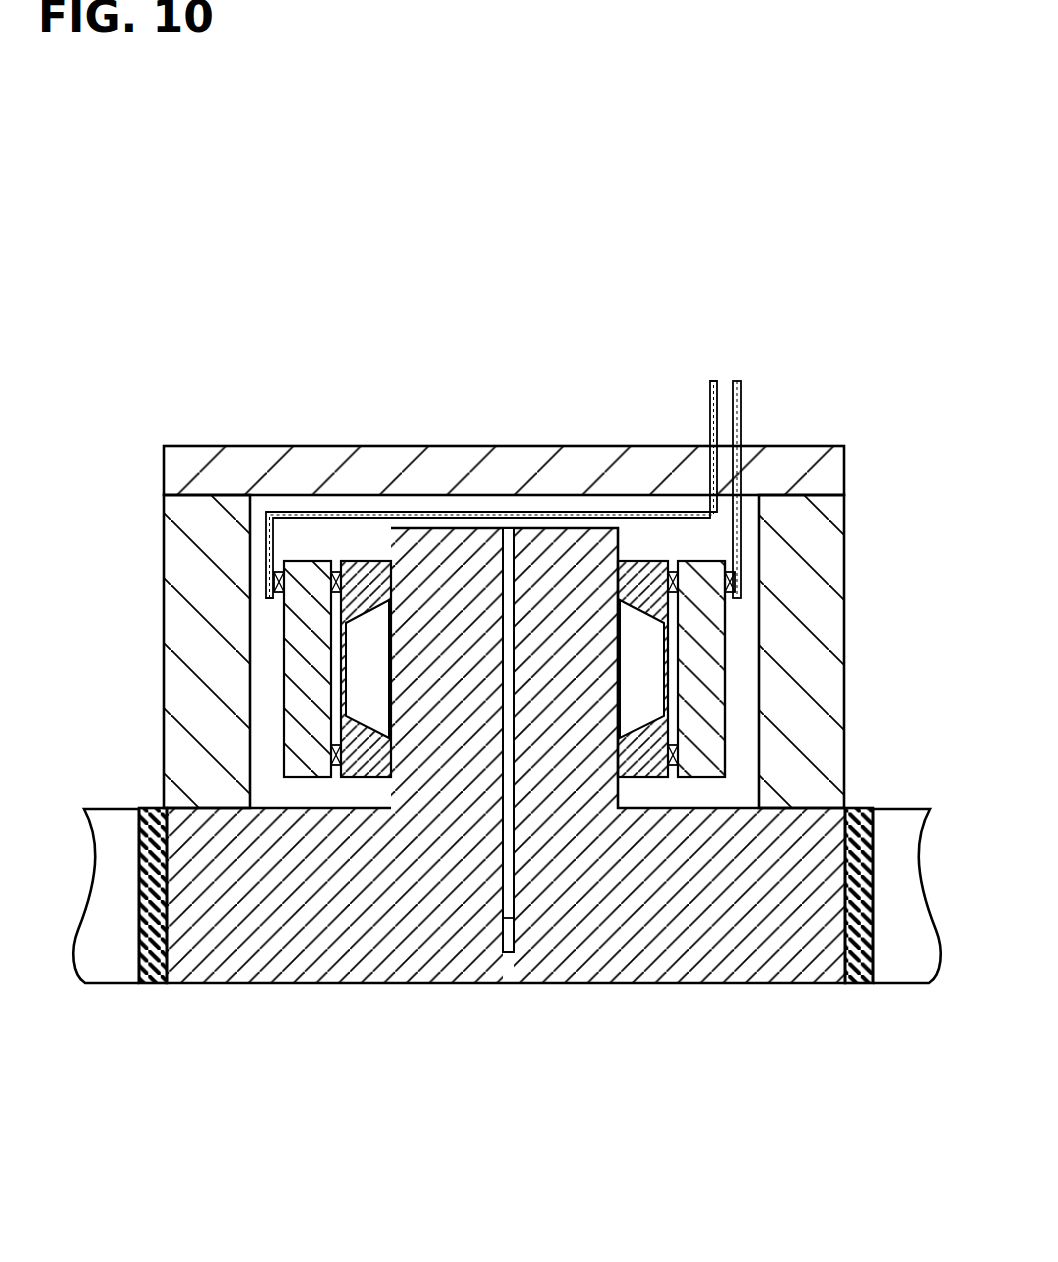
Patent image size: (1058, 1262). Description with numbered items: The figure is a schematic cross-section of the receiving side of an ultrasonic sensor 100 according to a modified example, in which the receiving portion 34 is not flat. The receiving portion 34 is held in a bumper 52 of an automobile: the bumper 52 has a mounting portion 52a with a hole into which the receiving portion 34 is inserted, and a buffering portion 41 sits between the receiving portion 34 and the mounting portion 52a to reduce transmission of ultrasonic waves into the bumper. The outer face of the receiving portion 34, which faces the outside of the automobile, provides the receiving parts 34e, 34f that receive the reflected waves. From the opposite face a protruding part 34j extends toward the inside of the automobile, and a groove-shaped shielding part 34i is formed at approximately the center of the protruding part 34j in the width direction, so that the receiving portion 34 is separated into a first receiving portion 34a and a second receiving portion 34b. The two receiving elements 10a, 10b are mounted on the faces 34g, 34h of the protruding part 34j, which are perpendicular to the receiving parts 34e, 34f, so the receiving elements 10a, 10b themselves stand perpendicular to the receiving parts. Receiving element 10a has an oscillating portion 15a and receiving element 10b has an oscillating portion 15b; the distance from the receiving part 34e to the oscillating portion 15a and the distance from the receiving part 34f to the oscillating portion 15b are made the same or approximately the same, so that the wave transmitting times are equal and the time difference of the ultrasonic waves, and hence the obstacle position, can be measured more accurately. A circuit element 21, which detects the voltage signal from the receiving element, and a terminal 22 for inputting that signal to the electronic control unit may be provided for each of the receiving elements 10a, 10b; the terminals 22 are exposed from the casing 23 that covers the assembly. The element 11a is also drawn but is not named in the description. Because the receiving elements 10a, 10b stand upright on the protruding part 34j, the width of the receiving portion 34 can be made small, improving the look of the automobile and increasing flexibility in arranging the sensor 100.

The ultrasonic sensor 100 is at (838, 320).
The casing 23 is at (193, 452).
The terminal 22 is at (710, 393).
The receiving element 10a is at (352, 560).
The receiving element 10b is at (663, 560).
The receiving portion 34 is at (506, 720).
The first receiving portion 34a is at (348, 964).
The second receiving portion 34b is at (635, 965).
The receiving part 34e is at (235, 984).
The receiving part 34f is at (762, 984).
The face 34g is at (358, 548).
The face 34h is at (624, 548).
The groove-shaped shielding part 34i is at (500, 920).
The protruding part 34j is at (456, 540).
The oscillating portion 15a is at (340, 680).
The oscillating portion 15b is at (668, 680).
The circuit element 21 is at (293, 748).
The bearing portion 11a is at (363, 778).
The buffering portion 41 is at (158, 976).
The bumper 52 is at (107, 976).
The mounting portion 52a is at (150, 976).